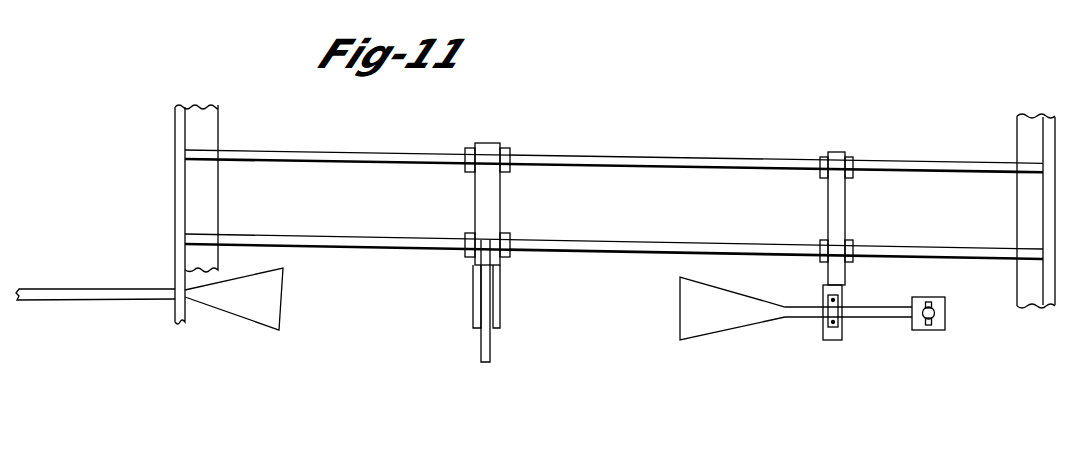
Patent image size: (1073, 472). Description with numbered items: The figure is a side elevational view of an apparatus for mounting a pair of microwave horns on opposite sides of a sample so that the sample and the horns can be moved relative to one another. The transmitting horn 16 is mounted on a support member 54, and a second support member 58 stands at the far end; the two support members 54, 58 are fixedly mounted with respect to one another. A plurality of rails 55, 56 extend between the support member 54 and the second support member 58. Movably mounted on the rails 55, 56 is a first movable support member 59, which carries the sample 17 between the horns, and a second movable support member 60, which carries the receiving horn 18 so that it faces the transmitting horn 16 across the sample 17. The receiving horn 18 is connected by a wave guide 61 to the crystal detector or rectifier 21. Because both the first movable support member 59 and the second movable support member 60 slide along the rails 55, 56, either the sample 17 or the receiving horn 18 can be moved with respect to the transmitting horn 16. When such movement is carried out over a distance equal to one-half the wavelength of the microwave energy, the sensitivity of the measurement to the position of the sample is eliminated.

The support member 54 is at (185, 273).
The rail 55 is at (323, 150).
The rail 56 is at (330, 236).
The second support member 58 is at (1017, 139).
The first movable support member 59 is at (490, 143).
The horn 16 is at (243, 312).
The sample 17 is at (487, 362).
The receiving horn 18 is at (726, 324).
The second movable support member 60 is at (830, 340).
The wave guide 61 is at (887, 319).
The crystal detector 21 is at (936, 330).